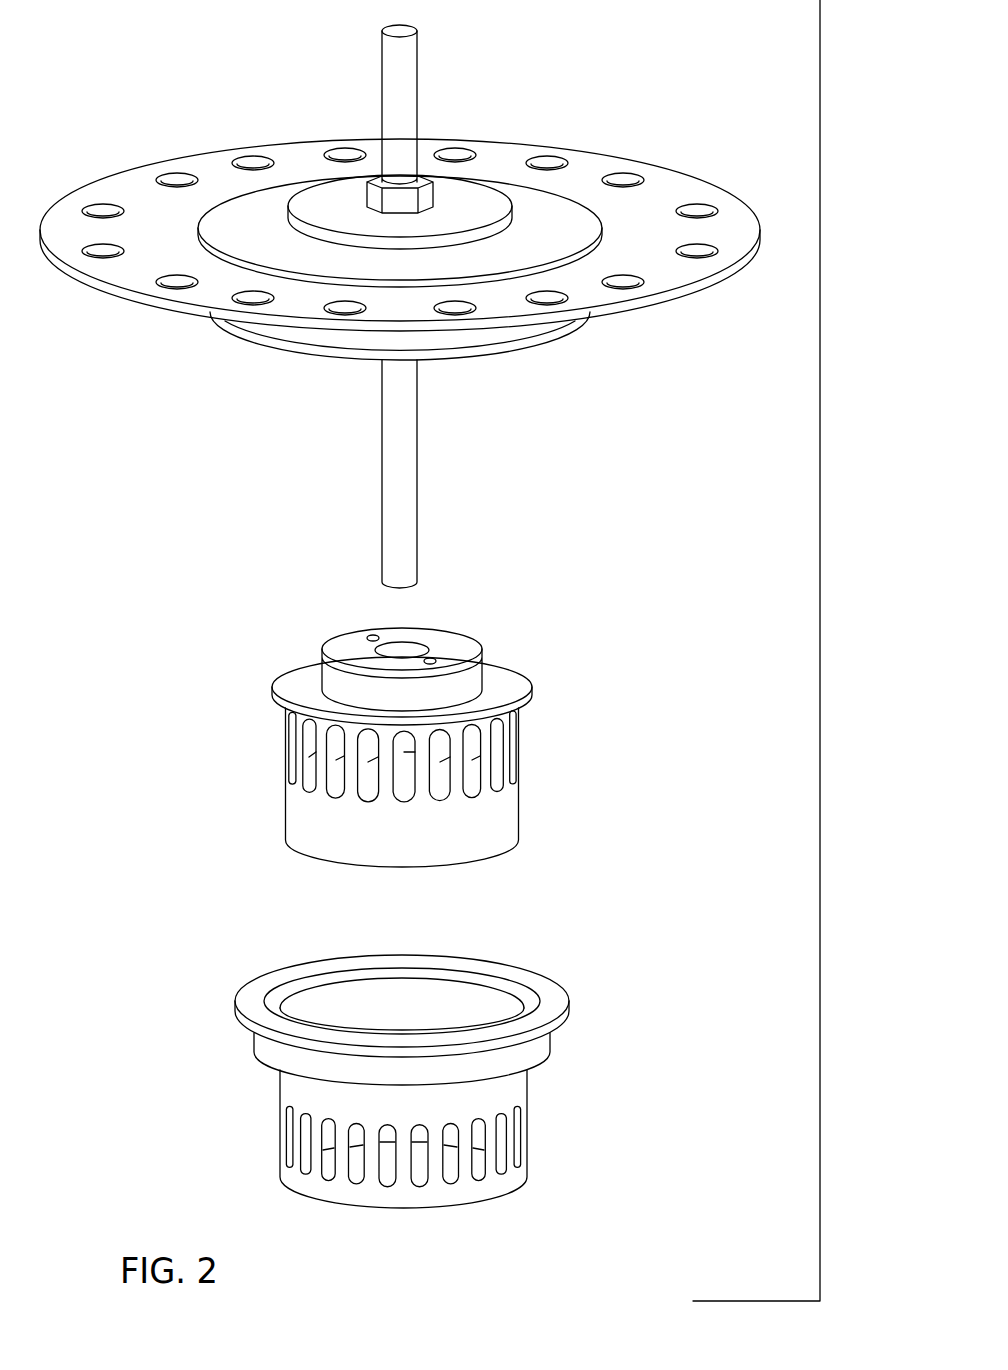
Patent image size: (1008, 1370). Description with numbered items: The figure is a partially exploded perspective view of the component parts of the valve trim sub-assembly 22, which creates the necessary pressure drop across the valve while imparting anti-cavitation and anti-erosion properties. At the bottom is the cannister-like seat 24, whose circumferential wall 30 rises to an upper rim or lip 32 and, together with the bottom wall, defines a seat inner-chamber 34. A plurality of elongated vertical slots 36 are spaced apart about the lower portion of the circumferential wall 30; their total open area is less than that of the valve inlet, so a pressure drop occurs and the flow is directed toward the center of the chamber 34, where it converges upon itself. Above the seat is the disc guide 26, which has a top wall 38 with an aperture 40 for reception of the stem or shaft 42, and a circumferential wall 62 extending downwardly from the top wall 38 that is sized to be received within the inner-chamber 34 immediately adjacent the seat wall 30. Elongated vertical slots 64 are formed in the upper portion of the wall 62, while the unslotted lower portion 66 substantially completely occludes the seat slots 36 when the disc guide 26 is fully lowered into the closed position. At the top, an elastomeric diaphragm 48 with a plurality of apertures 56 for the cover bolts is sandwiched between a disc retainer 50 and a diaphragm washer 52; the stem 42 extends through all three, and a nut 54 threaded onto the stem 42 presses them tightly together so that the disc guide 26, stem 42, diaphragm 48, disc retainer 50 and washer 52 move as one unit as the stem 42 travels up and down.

The sub-assembly 22 is at (822, 641).
The seat 24 is at (390, 1079).
The disc guide 26 is at (417, 724).
The circumferential wall 30 is at (502, 1095).
The upper rim or lip 32 is at (555, 997).
The seat inner-chamber 34 is at (407, 1012).
The elongated slots 36 is at (385, 1175).
The top wall 38 is at (298, 673).
The aperture 40 is at (408, 652).
The stem or shaft 42 is at (413, 477).
The diaphragm 48 is at (660, 187).
The disc retainer 50 is at (490, 357).
The diaphragm washer 52 is at (480, 197).
The nut 54 is at (377, 193).
The apertures 56 is at (625, 283).
The circumferential wall 62 is at (520, 757).
The elongated vertical slots 64 is at (307, 760).
The lower portion 66 is at (507, 823).